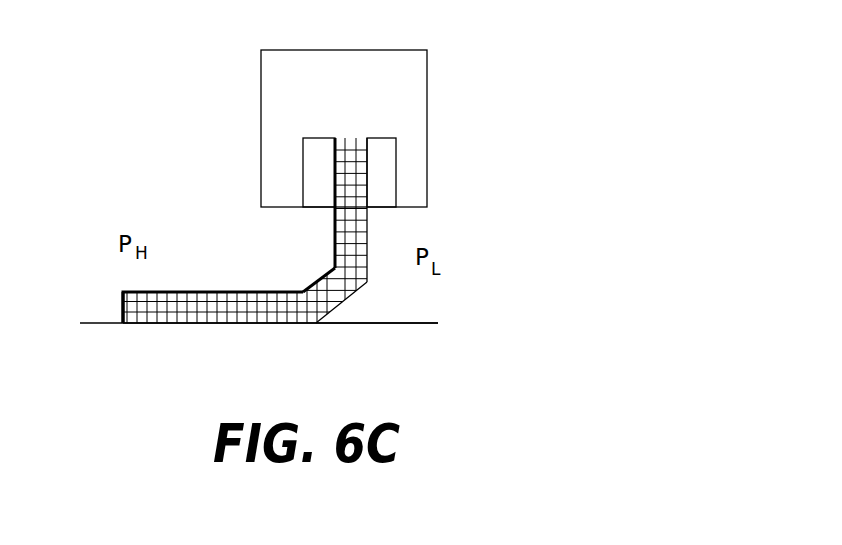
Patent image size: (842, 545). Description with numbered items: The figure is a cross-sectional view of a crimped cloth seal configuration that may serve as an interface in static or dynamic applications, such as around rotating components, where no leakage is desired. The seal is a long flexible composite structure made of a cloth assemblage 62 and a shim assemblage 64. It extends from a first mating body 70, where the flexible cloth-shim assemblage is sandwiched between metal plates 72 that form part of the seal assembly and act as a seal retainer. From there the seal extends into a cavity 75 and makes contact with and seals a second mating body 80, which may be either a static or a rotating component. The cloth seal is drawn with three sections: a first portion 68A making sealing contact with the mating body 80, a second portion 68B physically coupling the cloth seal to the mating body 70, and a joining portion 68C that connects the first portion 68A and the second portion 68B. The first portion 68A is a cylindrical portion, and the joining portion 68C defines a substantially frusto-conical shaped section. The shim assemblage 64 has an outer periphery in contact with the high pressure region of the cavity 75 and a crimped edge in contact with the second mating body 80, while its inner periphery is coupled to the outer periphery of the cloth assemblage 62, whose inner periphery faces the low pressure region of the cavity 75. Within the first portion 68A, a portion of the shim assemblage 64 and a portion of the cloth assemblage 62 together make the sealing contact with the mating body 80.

The first mating body 70 is at (358, 50).
The metal plates 72 is at (377, 138).
The first portion 68A is at (185, 290).
The second portion 68B is at (369, 228).
The joining portion 68C is at (315, 287).
The shim assemblage 64 is at (122, 290).
The cavity 75 is at (400, 300).
The second mating body 80 is at (100, 323).
The cloth assemblage 62 is at (222, 323).